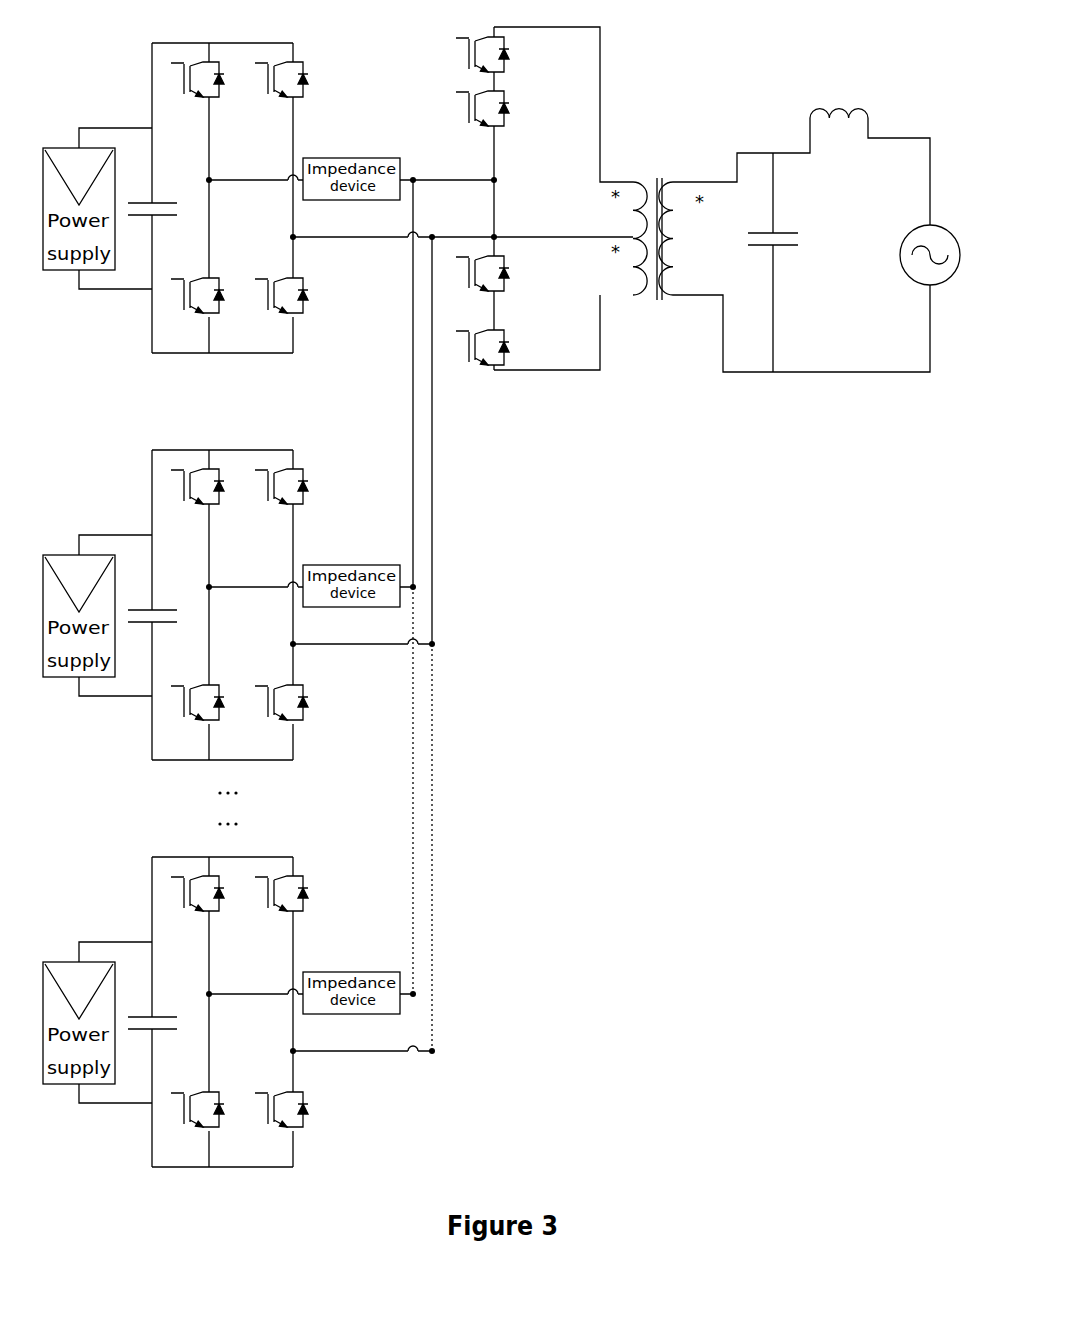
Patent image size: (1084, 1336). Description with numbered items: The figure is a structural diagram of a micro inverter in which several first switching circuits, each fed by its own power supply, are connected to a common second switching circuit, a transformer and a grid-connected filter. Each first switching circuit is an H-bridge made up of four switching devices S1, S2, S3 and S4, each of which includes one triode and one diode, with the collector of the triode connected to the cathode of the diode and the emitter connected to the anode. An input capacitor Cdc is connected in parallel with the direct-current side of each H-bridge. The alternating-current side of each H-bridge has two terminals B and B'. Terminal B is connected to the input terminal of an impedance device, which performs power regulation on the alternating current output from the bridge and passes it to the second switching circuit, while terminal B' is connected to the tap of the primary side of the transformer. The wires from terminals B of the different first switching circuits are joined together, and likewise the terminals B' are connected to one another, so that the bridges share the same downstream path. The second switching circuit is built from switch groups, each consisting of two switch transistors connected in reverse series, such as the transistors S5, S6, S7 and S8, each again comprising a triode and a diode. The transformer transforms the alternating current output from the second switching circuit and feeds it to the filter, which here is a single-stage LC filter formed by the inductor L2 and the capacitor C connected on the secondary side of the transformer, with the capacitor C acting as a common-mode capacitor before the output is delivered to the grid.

The switching device S1 is at (197, 505).
The switching device S2 is at (197, 720).
The switching device S3 is at (289, 720).
The switching device S4 is at (289, 505).
The switch transistor S5 is at (497, 55).
The switch transistor S6 is at (497, 108).
The switch transistor S7 is at (497, 273).
The switch transistor S8 is at (497, 347).
The input capacitor Cdc is at (159, 605).
The terminal B is at (215, 598).
The terminal B' is at (302, 634).
The inductor L2 is at (839, 101).
The capacitor C is at (775, 262).